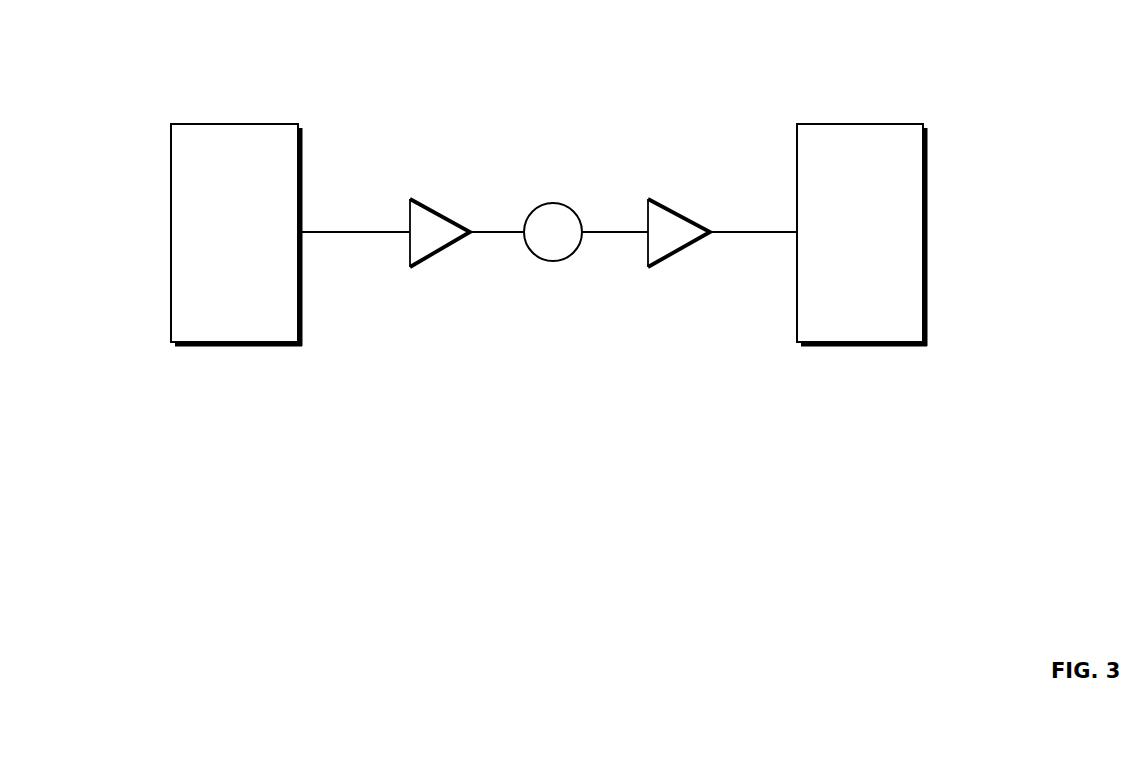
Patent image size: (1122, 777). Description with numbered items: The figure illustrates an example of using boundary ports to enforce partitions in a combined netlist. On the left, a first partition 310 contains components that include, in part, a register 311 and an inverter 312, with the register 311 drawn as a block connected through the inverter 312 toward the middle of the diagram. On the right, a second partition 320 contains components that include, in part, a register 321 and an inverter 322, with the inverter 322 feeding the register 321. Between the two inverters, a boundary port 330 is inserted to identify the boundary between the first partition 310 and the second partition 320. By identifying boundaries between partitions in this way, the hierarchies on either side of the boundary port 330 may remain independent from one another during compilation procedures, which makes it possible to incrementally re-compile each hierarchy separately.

The first partition 310 is at (116, 89).
The register 311 is at (216, 246).
The inverter 312 is at (431, 206).
The boundary port 330 is at (563, 204).
The inverter 322 is at (675, 206).
The second partition 320 is at (966, 89).
The register 321 is at (842, 246).